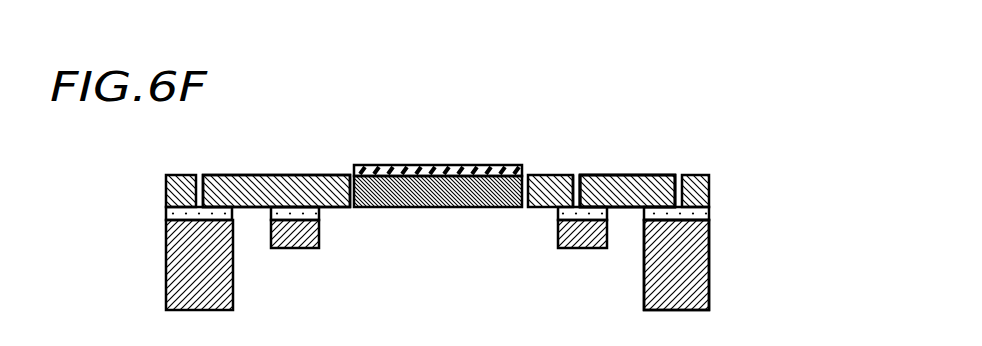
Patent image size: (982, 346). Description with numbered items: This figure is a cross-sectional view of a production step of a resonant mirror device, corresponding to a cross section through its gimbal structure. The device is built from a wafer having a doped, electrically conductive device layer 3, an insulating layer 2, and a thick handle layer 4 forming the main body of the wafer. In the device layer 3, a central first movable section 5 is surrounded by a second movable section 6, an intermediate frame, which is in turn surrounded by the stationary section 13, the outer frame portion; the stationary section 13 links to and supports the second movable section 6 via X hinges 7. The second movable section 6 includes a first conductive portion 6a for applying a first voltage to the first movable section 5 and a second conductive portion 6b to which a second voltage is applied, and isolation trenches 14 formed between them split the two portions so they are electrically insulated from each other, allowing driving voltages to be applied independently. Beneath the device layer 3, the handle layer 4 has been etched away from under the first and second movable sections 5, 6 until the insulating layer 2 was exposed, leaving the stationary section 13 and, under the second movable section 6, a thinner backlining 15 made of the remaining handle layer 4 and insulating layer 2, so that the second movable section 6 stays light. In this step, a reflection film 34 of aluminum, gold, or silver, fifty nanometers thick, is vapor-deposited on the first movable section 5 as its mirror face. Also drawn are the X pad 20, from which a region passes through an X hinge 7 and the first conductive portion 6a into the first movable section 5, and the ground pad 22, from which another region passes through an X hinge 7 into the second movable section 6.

The ground pad 22 is at (214, 176).
The X hinge 7 is at (260, 175).
The second movable section 6 is at (318, 175).
The reflection film 34 is at (428, 165).
The first movable section 5 is at (428, 207).
The second conductive portion 6b is at (543, 175).
The isolation trench 14 is at (577, 178).
The first conductive portion 6a is at (597, 175).
The X pad 20 is at (672, 175).
The device layer 3 is at (711, 188).
The insulating layer 2 is at (690, 214).
The handle layer 4 is at (692, 253).
The backlining 15 is at (560, 237).
The stationary section 13 is at (710, 290).